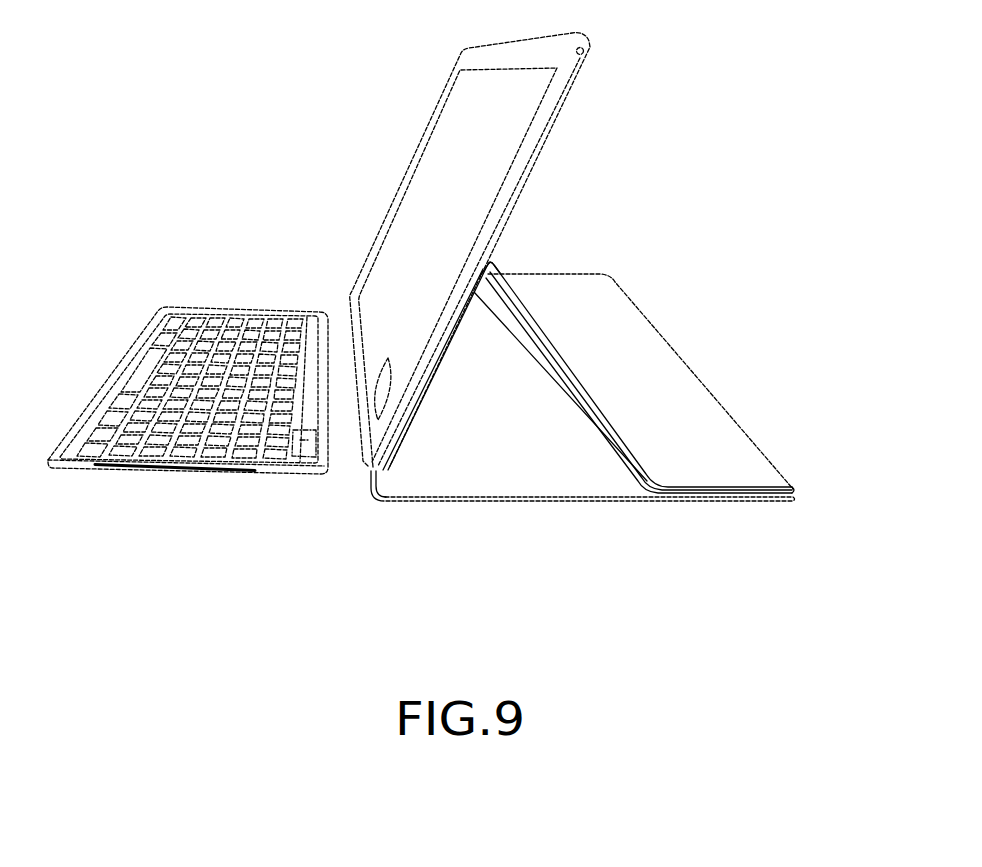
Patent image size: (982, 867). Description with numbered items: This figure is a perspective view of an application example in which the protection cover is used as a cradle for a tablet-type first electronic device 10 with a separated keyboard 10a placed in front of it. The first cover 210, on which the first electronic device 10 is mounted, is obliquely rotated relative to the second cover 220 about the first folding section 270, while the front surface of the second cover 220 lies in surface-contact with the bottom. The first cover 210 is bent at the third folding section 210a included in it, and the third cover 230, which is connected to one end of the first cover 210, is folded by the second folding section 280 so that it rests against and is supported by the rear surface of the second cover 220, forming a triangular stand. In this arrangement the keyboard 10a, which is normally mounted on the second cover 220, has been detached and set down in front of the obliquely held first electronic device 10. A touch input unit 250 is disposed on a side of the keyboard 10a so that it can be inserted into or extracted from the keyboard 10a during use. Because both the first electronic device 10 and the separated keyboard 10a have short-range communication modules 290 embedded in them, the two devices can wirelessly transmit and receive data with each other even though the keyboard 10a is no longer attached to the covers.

The first electronic device 10 is at (430, 185).
The keyboard 10a is at (233, 309).
The first cover 210 is at (537, 322).
The third folding section 210a is at (496, 263).
The second cover 220 is at (495, 501).
The third cover 230 is at (616, 431).
The touch input unit 250 is at (153, 468).
The first folding section 270 is at (372, 491).
The second folding section 280 is at (799, 492).
The short-range communication module 290 is at (306, 466).